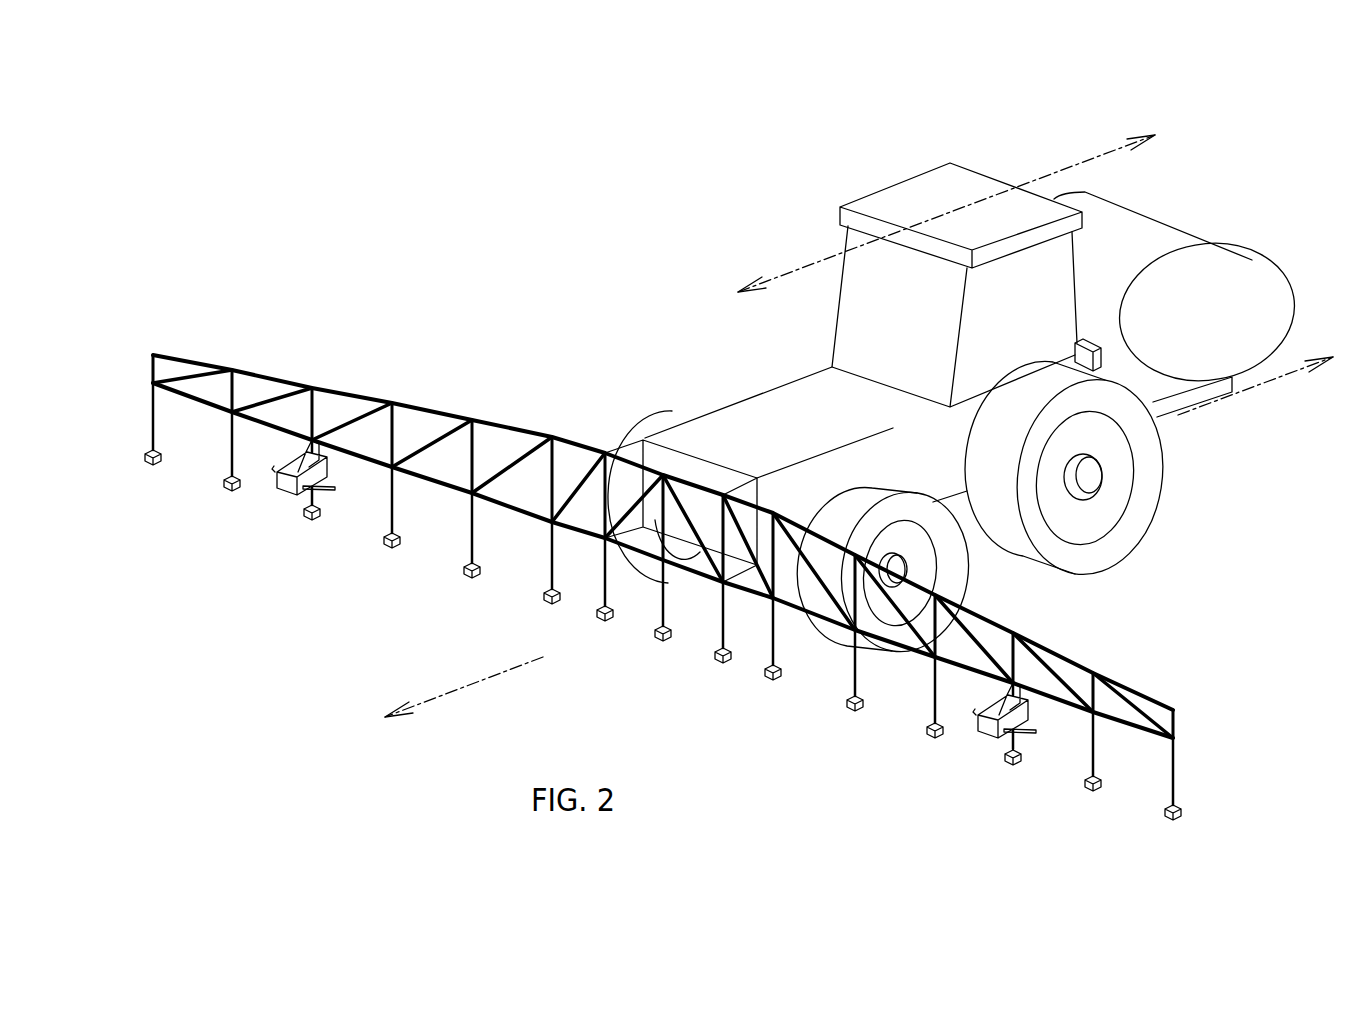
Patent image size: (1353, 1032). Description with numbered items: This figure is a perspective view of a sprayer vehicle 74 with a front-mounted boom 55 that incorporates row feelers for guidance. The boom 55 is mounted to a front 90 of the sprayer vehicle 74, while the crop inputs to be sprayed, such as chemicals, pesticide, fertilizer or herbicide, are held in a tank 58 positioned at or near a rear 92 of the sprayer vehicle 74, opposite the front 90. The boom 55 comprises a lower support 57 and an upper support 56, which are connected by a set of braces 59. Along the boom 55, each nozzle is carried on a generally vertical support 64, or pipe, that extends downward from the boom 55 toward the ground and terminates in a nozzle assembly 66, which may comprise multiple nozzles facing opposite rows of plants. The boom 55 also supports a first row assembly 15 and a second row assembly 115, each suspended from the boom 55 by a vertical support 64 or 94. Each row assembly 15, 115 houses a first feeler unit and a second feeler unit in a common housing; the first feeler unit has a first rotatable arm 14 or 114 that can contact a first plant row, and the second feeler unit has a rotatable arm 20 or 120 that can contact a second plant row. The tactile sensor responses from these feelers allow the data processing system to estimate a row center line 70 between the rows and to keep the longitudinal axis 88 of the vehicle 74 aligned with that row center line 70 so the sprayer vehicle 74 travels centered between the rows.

The first rotatable arm 14 is at (616, 652).
The first rotatable arm 114 is at (616, 652).
The row assembly 15 is at (614, 639).
The row assembly 115 is at (297, 500).
The rotatable arm 20 is at (674, 675).
The rotatable arm 120 is at (333, 490).
The boom 55 is at (563, 376).
The upper support 56 is at (276, 375).
The lower support 57 is at (436, 488).
The tank 58 is at (1148, 230).
The braces 59 is at (436, 428).
The vertical support 64 is at (232, 458).
The vertical support 94 is at (318, 438).
The nozzle assembly 66 is at (157, 470).
The row center line 70 is at (1232, 407).
The sprayer vehicle 74 is at (894, 151).
The longitudinal axis 88 is at (1047, 168).
The front 90 is at (712, 443).
The rear 92 is at (1090, 343).